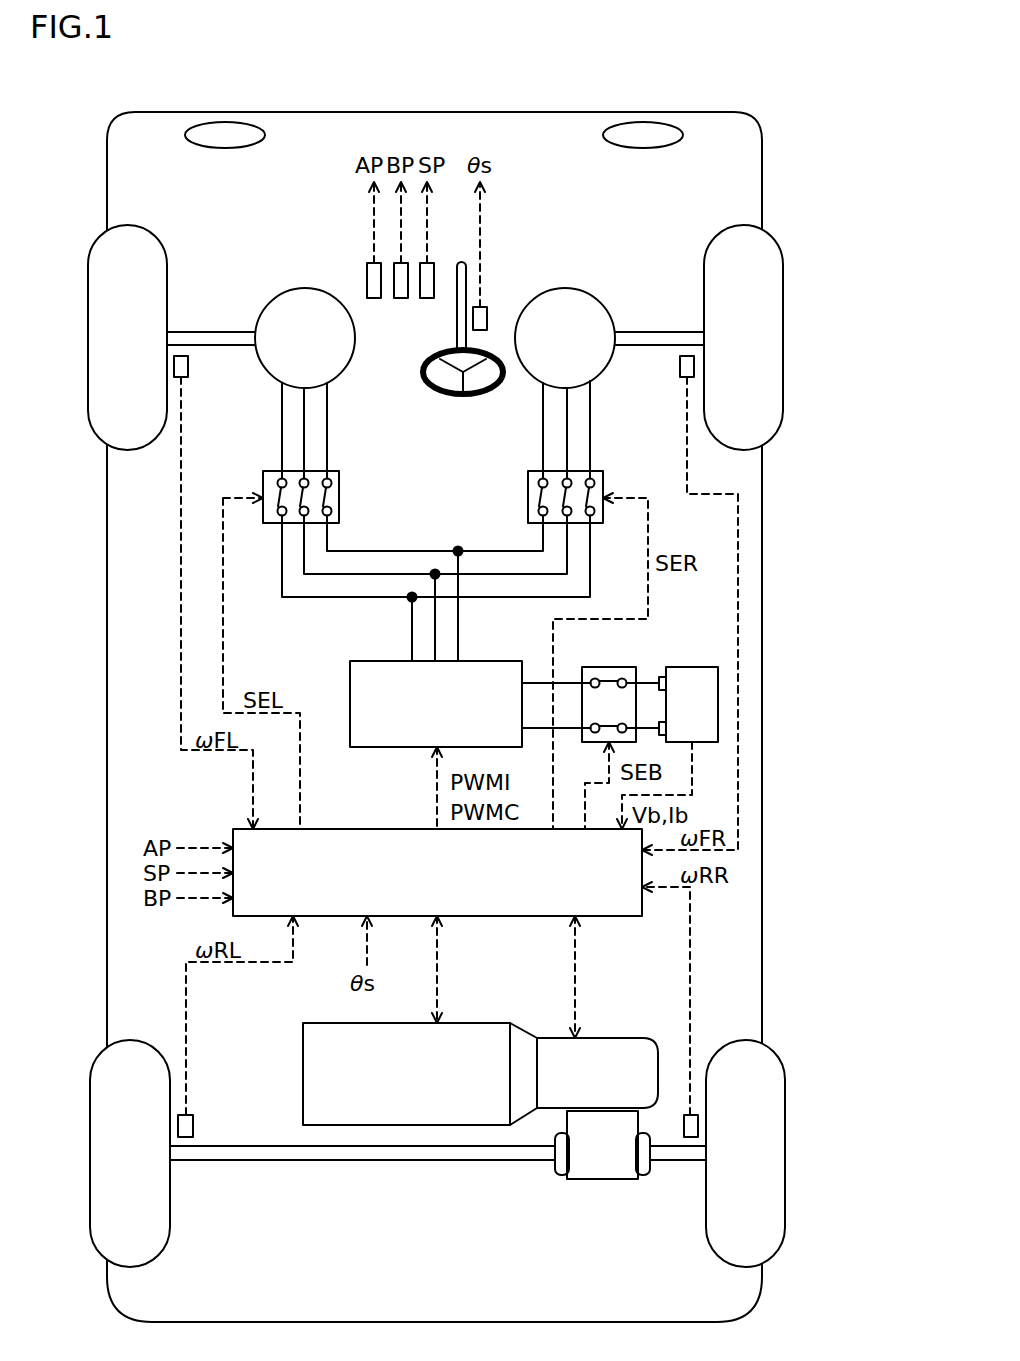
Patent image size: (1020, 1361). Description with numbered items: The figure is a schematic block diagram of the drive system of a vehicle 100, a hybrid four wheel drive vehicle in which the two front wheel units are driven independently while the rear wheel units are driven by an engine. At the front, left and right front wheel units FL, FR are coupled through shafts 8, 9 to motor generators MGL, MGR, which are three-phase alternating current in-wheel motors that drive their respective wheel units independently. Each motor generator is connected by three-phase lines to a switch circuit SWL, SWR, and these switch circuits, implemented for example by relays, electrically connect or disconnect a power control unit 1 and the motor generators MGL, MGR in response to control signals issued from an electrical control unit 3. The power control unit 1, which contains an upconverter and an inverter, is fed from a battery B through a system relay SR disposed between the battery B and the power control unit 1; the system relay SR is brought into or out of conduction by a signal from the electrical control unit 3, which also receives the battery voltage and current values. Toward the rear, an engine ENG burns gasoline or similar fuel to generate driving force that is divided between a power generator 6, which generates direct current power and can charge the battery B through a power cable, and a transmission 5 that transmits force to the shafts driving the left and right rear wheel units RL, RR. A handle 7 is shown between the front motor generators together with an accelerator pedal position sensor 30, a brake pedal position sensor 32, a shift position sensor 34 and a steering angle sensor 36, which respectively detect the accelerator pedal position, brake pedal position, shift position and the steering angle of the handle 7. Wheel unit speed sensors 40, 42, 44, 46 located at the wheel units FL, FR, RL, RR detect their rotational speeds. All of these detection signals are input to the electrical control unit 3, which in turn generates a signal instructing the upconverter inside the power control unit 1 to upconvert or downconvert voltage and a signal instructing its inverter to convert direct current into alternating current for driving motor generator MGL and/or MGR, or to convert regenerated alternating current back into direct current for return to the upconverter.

The vehicle 100 is at (700, 112).
The power control unit 1 is at (363, 747).
The electrical control unit 3 is at (505, 916).
The transmission 5 is at (527, 1035).
The power generator 6 is at (618, 1040).
The handle 7 is at (447, 393).
The shaft 8 is at (215, 331).
The shaft 9 is at (662, 331).
The accelerator pedal position sensor 30 is at (374, 298).
The brake pedal position sensor 32 is at (401, 298).
The shift position sensor 34 is at (428, 298).
The steering angle sensor 36 is at (487, 318).
The wheel unit speed sensor 40 is at (188, 365).
The wheel unit speed sensor 42 is at (680, 365).
The wheel unit speed sensor 44 is at (193, 1126).
The wheel unit speed sensor 46 is at (684, 1130).
The motor generator MGL is at (302, 288).
The motor generator MGR is at (564, 288).
The switch circuit SWL is at (339, 497).
The switch circuit SWR is at (528, 497).
The system relay SR is at (612, 667).
The battery B is at (690, 667).
The engine ENG is at (303, 1076).
The left front wheel unit FL is at (88, 338).
The right front wheel unit FR is at (783, 338).
The left rear wheel unit RL is at (90, 1153).
The right rear wheel unit RR is at (785, 1153).